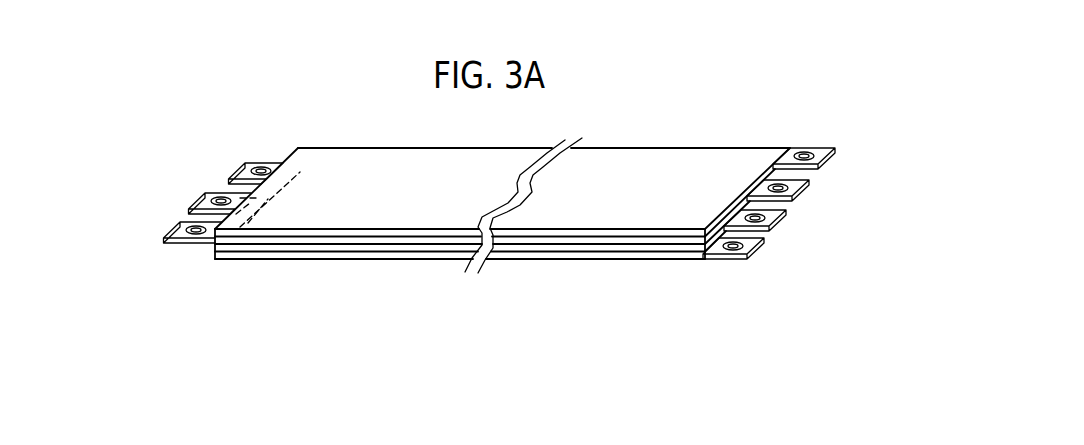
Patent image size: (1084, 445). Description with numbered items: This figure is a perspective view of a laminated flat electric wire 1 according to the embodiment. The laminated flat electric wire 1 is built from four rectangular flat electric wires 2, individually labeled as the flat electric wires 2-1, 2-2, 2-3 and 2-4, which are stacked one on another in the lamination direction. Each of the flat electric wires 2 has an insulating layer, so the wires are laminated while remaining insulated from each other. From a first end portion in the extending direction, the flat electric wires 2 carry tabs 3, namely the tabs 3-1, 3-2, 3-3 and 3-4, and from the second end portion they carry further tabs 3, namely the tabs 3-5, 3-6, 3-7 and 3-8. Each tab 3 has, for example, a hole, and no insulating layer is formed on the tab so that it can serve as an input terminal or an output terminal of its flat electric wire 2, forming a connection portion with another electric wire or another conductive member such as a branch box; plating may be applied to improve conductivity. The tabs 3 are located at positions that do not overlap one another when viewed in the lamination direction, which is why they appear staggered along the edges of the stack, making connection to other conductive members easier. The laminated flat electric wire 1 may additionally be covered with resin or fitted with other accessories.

The laminated flat electric wire 1 is at (246, 141).
The flat electric wires 2 is at (460, 303).
The flat electric wire 2-1 is at (460, 270).
The flat electric wire 2-2 is at (460, 280).
The flat electric wire 2-3 is at (460, 286).
The flat electric wire 2-4 is at (255, 323).
The tabs 3 is at (112, 169).
The tab 3-1 is at (859, 167).
The tab 3-2 is at (834, 198).
The tab 3-3 is at (811, 227).
The tab 3-4 is at (787, 254).
The tab 3-5 is at (178, 206).
The tab 3-6 is at (154, 236).
The tab 3-7 is at (214, 176).
The tab 3-8 is at (215, 244).